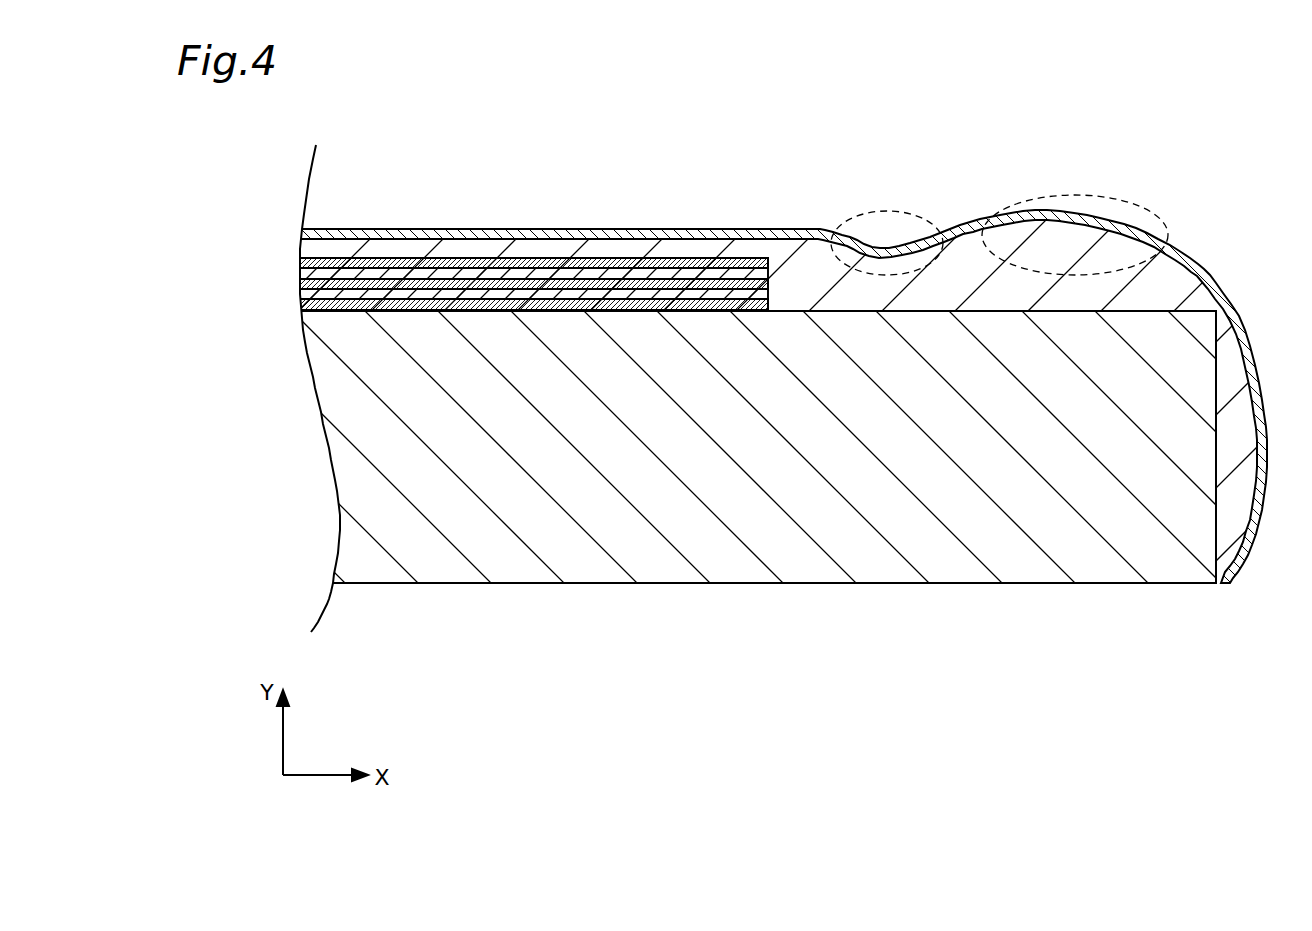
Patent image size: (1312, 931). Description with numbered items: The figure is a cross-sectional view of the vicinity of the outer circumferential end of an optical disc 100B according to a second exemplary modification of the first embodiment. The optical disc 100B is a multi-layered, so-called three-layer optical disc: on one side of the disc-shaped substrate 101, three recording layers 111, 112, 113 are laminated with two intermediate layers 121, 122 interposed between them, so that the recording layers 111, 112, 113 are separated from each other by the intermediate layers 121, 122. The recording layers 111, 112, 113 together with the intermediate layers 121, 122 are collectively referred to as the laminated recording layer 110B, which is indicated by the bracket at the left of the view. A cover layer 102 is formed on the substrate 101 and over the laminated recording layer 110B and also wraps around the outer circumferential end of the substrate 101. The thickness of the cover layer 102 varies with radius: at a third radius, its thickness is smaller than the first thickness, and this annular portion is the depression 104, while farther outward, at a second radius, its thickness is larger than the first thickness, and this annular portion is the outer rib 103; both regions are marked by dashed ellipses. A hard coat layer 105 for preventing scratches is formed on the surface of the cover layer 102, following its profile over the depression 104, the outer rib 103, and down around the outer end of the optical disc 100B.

The optical disc 100B is at (727, 100).
The substrate 101 is at (652, 557).
The cover layer 102 is at (800, 262).
The outer rib 103 is at (1072, 195).
The depression 104 is at (893, 208).
The hard coat layer 105 is at (1232, 298).
The laminated recording layer 110B is at (452, 285).
The recording layer 111 is at (494, 323).
The recording layer 112 is at (300, 285).
The recording layer 113 is at (300, 262).
The intermediate layer 121 is at (300, 297).
The intermediate layer 122 is at (300, 273).